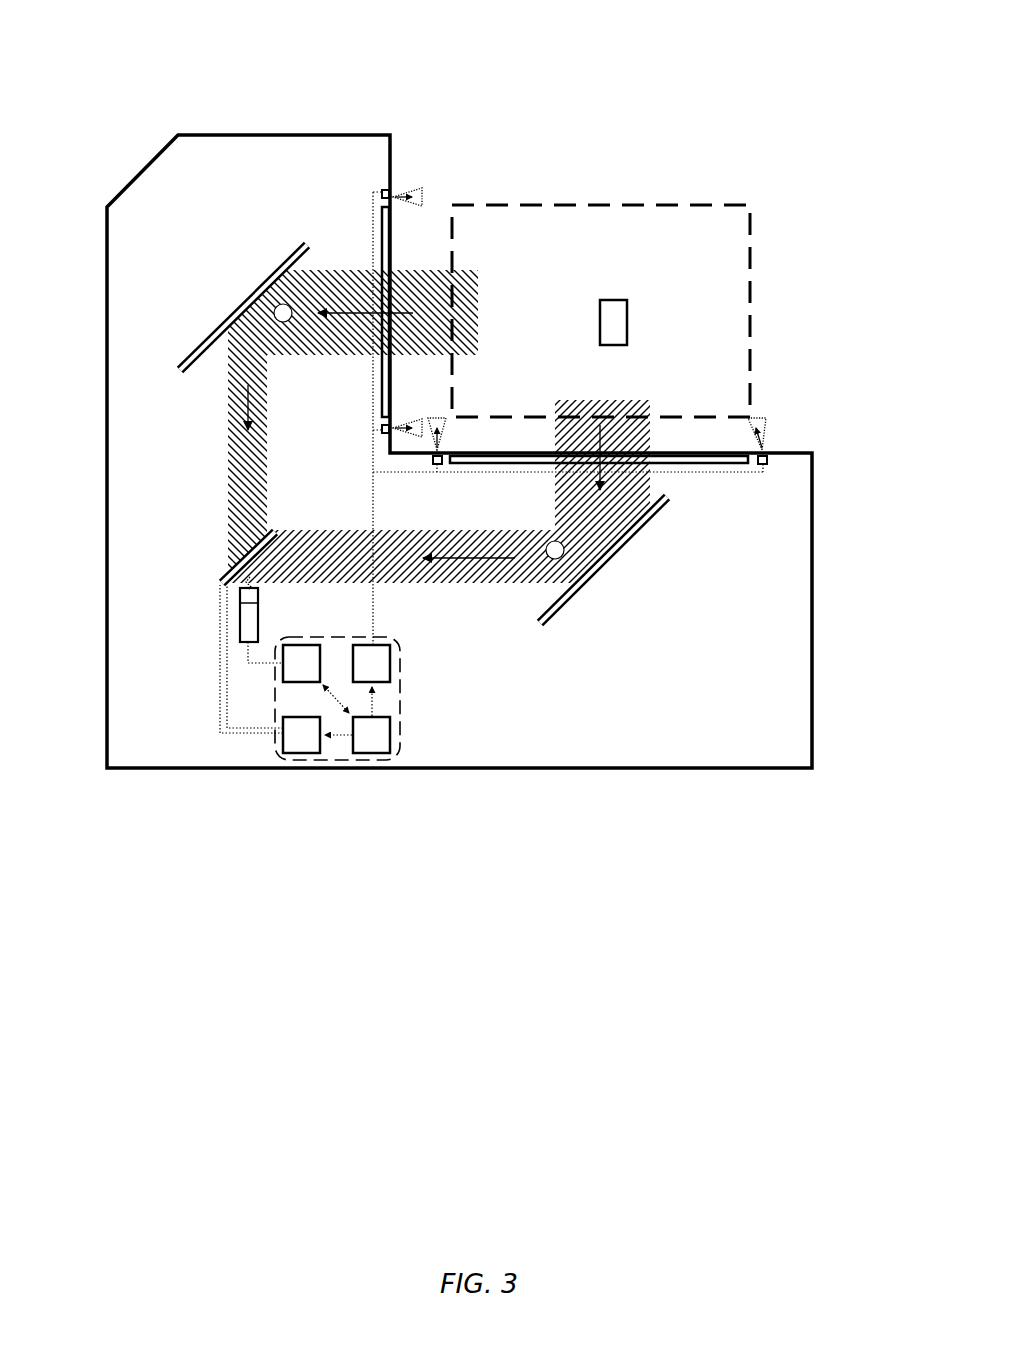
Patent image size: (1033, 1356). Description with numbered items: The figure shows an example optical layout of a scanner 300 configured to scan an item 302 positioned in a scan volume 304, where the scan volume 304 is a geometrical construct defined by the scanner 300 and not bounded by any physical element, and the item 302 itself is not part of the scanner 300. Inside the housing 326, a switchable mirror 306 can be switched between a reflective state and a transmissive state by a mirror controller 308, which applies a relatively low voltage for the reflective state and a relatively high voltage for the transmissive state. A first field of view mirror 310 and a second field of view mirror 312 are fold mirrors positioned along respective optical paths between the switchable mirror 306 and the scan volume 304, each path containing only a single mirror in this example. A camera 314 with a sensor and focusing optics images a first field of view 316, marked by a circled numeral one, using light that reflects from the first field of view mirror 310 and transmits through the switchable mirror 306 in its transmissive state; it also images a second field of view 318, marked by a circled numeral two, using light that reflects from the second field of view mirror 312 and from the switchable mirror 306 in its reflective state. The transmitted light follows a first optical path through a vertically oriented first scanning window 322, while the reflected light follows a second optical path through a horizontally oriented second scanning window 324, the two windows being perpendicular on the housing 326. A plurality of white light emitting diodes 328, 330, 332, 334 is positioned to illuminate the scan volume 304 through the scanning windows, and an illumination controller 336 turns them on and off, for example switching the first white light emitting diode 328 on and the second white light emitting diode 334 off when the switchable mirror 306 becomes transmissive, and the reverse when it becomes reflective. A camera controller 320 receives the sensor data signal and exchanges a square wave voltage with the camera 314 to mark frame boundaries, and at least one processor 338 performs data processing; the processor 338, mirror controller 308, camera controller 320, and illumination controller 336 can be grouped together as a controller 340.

The scanner 300 is at (246, 78).
The item 302 is at (628, 322).
The scan volume 304 is at (600, 207).
The switchable mirror 306 is at (232, 567).
The mirror controller 308 is at (302, 754).
The first field of view mirror 310 is at (190, 350).
The second field of view mirror 312 is at (556, 622).
The camera 314 is at (240, 613).
The first field of view 316 is at (479, 288).
The second field of view 318 is at (560, 400).
The camera controller 320 is at (303, 645).
The first scanning window 322 is at (382, 390).
The second scanning window 324 is at (730, 464).
The housing 326 is at (107, 306).
The first white light emitting diode 328 is at (382, 190).
The white light emitting diode 330 is at (382, 433).
The white light emitting diode 332 is at (433, 464).
The second white light emitting diode 334 is at (768, 459).
The illumination controller 336 is at (391, 665).
The processor 338 is at (391, 735).
The controller 340 is at (365, 761).